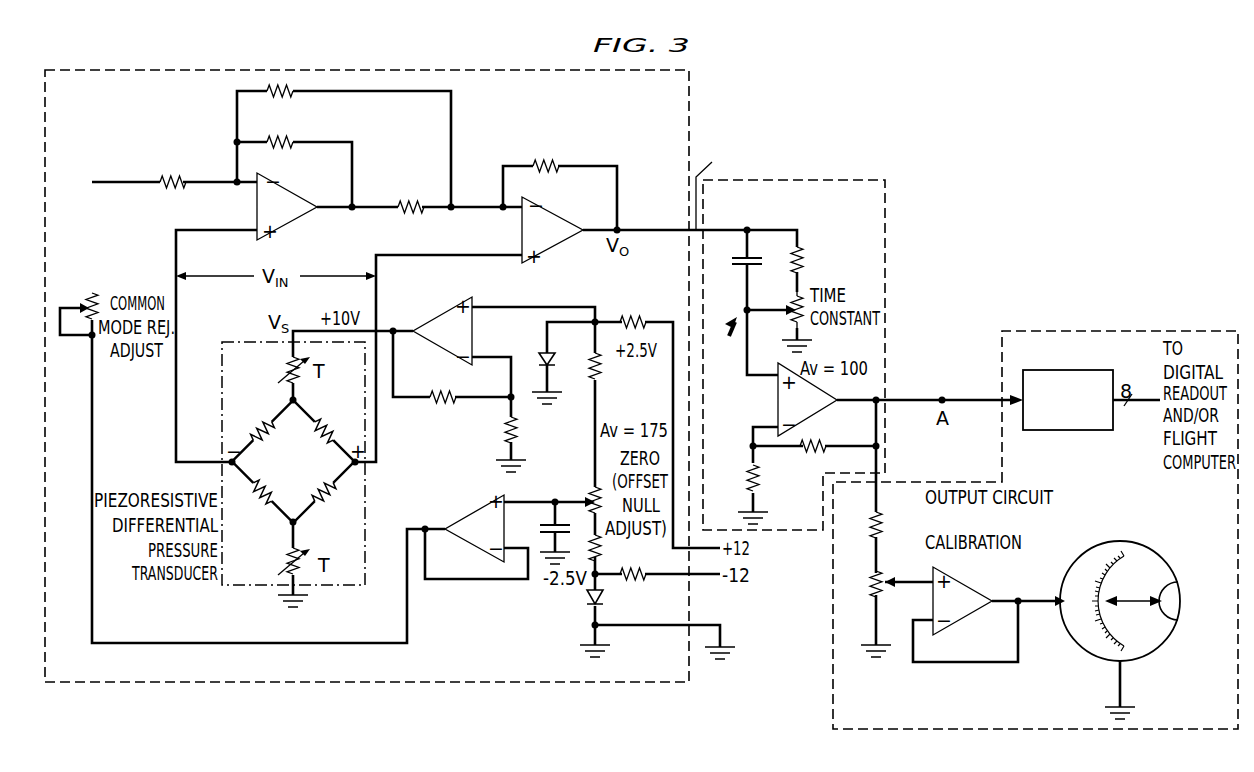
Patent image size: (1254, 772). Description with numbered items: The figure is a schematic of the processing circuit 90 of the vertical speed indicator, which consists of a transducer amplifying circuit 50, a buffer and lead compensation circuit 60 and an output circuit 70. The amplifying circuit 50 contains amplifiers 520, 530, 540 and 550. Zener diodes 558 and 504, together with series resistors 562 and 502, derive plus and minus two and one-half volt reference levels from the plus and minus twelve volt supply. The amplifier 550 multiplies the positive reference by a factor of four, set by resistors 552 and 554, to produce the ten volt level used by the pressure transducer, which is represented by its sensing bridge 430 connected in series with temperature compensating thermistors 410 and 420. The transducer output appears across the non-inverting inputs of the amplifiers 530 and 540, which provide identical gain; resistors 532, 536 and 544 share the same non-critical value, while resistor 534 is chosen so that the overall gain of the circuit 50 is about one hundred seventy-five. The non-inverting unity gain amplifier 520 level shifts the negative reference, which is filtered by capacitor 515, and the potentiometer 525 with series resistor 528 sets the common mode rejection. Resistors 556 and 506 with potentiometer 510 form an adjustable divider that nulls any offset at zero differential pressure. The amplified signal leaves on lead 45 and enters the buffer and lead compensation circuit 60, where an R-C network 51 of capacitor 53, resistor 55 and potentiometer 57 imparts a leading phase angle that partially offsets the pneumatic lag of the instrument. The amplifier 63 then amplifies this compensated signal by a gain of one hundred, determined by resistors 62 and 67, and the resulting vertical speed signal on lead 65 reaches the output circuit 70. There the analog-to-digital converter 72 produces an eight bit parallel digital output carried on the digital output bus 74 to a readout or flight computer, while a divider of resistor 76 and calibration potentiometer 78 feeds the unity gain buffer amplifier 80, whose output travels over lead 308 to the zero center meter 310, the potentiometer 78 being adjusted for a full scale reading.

The transducer amplifying circuit 50 is at (353, 70).
The buffer and lead compensation circuit 60 is at (851, 180).
The output circuit 70 is at (1025, 331).
The lead 45 is at (710, 182).
The R-C network 51 is at (729, 336).
The capacitor 53 is at (735, 268).
The resistor 55 is at (809, 254).
The potentiometer 57 is at (795, 299).
The resistor 62 is at (746, 481).
The amplifier 63 is at (776, 366).
The lead 65 is at (919, 398).
The resistor 67 is at (815, 443).
The analog-to-digital converter 72 is at (1056, 370).
The digital output bus 74 is at (1147, 394).
The resistor 76 is at (868, 520).
The calibration potentiometer 78 is at (868, 584).
The buffer amplifier 80 is at (967, 582).
The processing circuit 90 is at (430, 688).
The lead 308 is at (1037, 598).
The zero center meter 310 is at (1165, 560).
The temperature compensating thermistor 410 is at (283, 368).
The temperature compensating thermistor 420 is at (284, 553).
The sensing bridge 430 is at (305, 477).
The series resistor 502 is at (633, 586).
The zener diode 504 is at (584, 597).
The resistor 506 is at (606, 546).
The potentiometer 510 is at (589, 496).
The capacitor 515 is at (542, 525).
The amplifier 520 is at (489, 512).
The potentiometer 525 is at (80, 300).
The series resistor 528 is at (169, 176).
The amplifier 530 is at (288, 188).
The resistor 532 is at (284, 137).
The resistor 534 is at (283, 97).
The resistor 536 is at (406, 201).
The amplifier 540 is at (552, 209).
The resistor 544 is at (547, 160).
The amplifier 550 is at (452, 305).
The resistor 552 is at (440, 416).
The resistor 554 is at (505, 425).
The resistor 556 is at (605, 368).
The zener diode 558 is at (540, 353).
The series resistor 562 is at (630, 314).